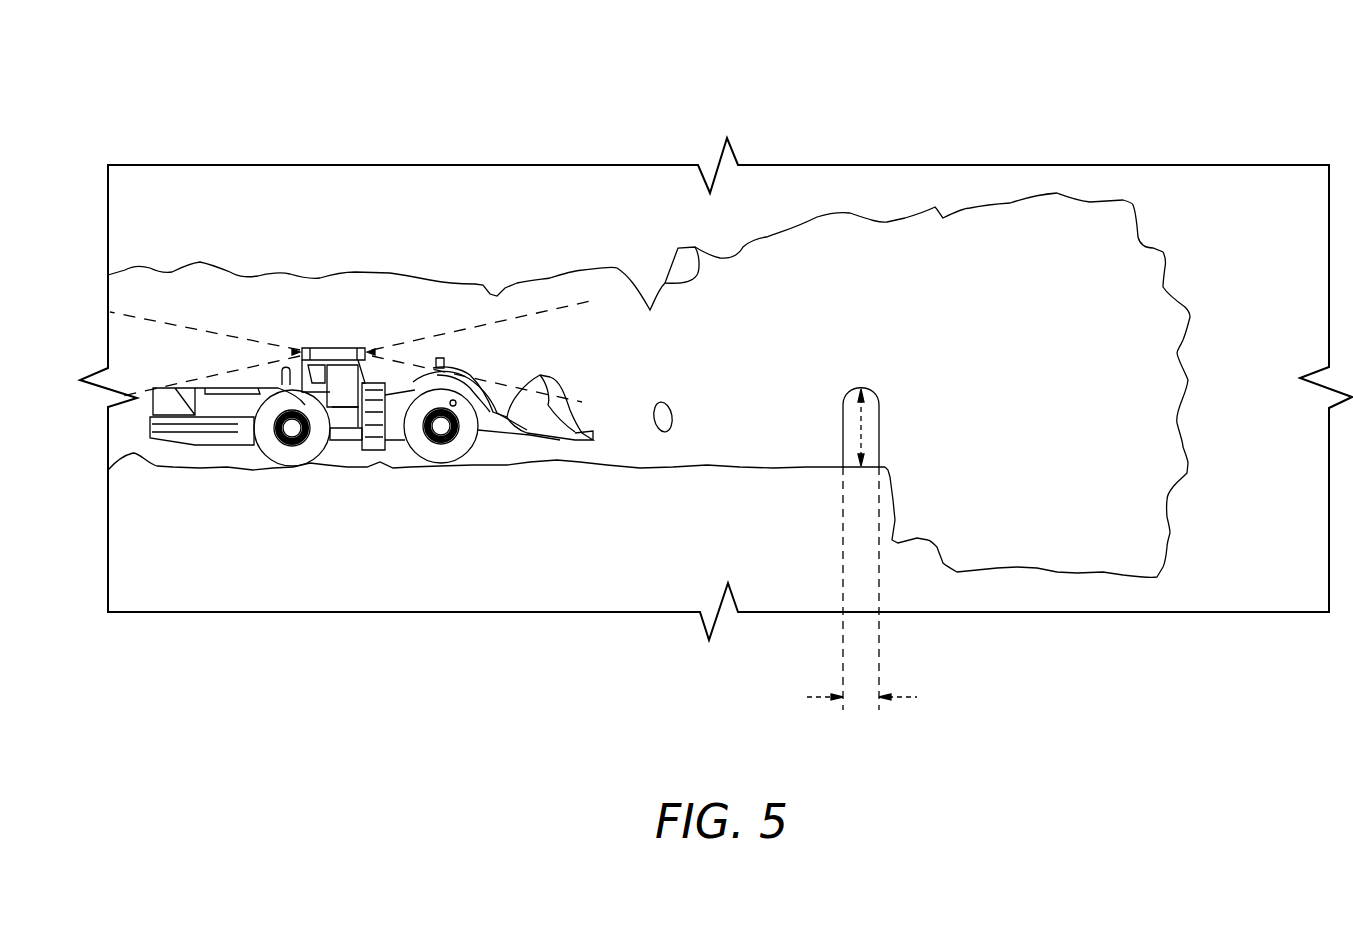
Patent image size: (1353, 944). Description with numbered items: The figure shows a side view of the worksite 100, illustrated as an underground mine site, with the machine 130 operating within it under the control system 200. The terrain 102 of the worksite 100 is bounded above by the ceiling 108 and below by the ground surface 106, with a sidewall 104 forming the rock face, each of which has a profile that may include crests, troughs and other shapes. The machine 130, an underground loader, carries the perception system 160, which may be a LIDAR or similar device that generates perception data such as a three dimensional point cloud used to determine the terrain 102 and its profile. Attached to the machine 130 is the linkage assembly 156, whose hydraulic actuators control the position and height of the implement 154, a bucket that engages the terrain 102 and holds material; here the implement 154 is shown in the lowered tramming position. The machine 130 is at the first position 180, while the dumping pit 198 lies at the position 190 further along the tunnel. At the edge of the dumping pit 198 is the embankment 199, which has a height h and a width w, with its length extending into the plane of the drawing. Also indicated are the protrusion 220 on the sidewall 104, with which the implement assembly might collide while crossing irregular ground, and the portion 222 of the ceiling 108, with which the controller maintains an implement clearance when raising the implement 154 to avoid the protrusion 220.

The worksite 100 is at (150, 290).
The terrain 102 is at (197, 283).
The sidewall 104 is at (245, 313).
The ground surface 106 is at (125, 453).
The ceiling 108 is at (493, 295).
The machine 130 is at (566, 337).
The implement 154 is at (580, 421).
The linkage assembly 156 is at (468, 378).
The perception system 160 is at (324, 318).
The first position 180 is at (358, 460).
The position of dumping pit 190 is at (1013, 468).
The dumping pit 198 is at (1028, 543).
The embankment 199 is at (882, 430).
The control system 200 is at (347, 345).
The protrusion 220 is at (672, 422).
The portion of the ceiling 222 is at (695, 250).